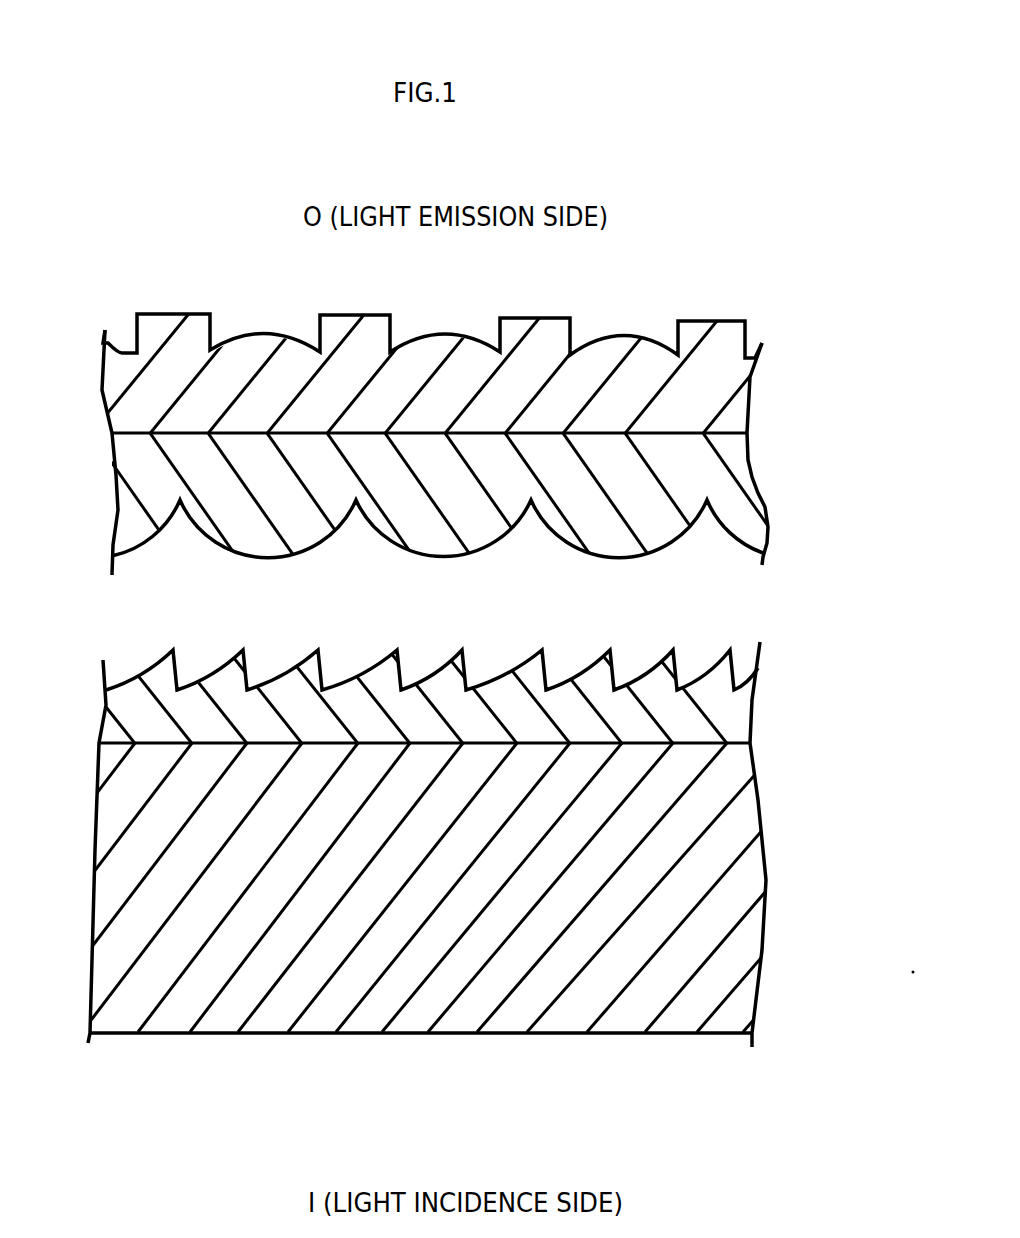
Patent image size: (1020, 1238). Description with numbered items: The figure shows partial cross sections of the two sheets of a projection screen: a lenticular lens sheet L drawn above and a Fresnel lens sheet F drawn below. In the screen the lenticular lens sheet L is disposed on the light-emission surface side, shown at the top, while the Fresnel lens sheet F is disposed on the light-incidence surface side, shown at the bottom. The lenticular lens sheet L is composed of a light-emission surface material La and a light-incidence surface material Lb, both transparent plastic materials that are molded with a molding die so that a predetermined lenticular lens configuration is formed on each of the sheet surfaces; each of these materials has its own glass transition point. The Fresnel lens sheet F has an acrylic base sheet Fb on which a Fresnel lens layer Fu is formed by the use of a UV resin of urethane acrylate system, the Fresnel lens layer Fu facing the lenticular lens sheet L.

The lenticular lens sheet L is at (470, 440).
The light-emission surface material La is at (625, 377).
The light-incidence surface material Lb is at (629, 507).
The Fresnel lens sheet F is at (497, 871).
The Fresnel lens layer Fu is at (693, 670).
The acrylic base sheet Fb is at (675, 1022).